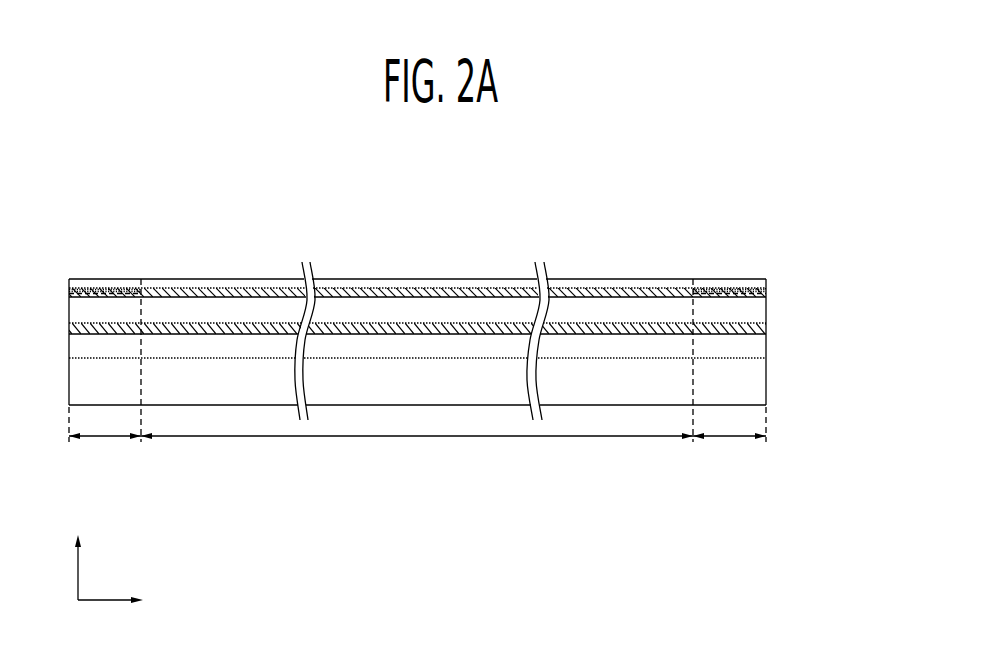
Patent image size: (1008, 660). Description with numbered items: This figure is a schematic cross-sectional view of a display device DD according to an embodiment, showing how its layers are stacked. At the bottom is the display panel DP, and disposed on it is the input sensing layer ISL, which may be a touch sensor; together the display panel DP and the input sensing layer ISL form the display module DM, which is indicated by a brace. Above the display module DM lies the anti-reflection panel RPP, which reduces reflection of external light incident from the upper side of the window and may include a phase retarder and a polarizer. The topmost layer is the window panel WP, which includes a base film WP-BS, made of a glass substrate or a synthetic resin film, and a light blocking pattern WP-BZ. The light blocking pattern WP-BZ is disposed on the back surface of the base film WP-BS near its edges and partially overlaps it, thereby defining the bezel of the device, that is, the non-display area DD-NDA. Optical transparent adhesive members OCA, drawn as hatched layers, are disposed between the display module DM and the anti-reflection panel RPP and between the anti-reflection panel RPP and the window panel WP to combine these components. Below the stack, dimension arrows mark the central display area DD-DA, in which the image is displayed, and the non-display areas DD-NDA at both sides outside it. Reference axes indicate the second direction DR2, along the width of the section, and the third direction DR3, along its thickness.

The display device DD is at (801, 182).
The window panel WP is at (423, 238).
The base film WP-BS is at (647, 287).
The light blocking pattern WP-BZ is at (730, 287).
The optical transparent adhesive member OCA is at (425, 328).
The anti-reflection panel RPP is at (760, 310).
The input sensing layer ISL is at (760, 347).
The display panel DP is at (760, 383).
The display module DM is at (468, 362).
The non-display area DD-NDA is at (418, 376).
The display area DD-DA is at (417, 450).
The third direction DR3 is at (79, 555).
The second direction DR2 is at (131, 602).